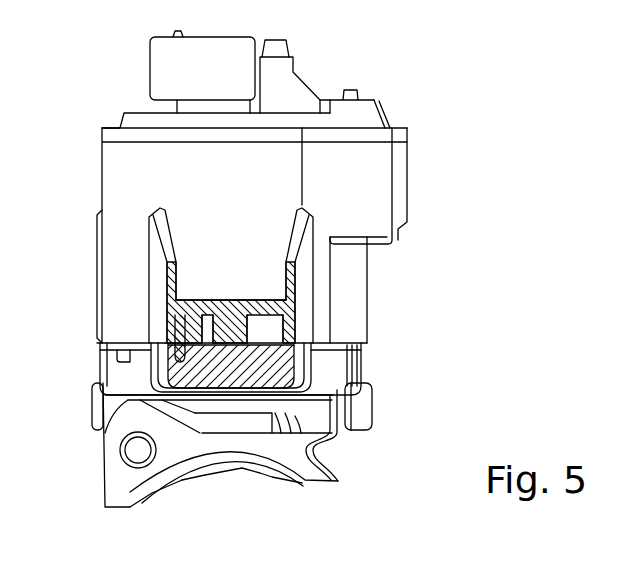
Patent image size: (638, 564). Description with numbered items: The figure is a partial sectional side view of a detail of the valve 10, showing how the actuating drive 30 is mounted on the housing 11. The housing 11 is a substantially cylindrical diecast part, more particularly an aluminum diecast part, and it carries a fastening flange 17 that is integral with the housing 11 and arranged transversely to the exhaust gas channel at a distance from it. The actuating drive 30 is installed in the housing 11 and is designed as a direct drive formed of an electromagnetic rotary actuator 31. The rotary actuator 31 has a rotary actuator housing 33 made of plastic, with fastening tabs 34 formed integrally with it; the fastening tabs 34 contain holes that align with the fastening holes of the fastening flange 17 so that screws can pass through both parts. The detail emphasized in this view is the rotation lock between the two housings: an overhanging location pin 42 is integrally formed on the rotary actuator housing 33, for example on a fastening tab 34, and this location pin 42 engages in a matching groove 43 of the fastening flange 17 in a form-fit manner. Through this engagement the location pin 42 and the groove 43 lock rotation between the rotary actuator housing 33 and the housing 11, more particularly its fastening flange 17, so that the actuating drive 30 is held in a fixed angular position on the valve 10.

The valve 10 is at (443, 108).
The actuating drive 30 is at (118, 79).
The electromagnetic rotary actuator 31 is at (101, 167).
The rotary actuator housing 33 is at (386, 195).
The fastening tab 34 is at (290, 307).
The location pin 42 is at (190, 329).
The groove 43 is at (170, 360).
The fastening flange 17 is at (283, 371).
The housing 11 is at (323, 472).